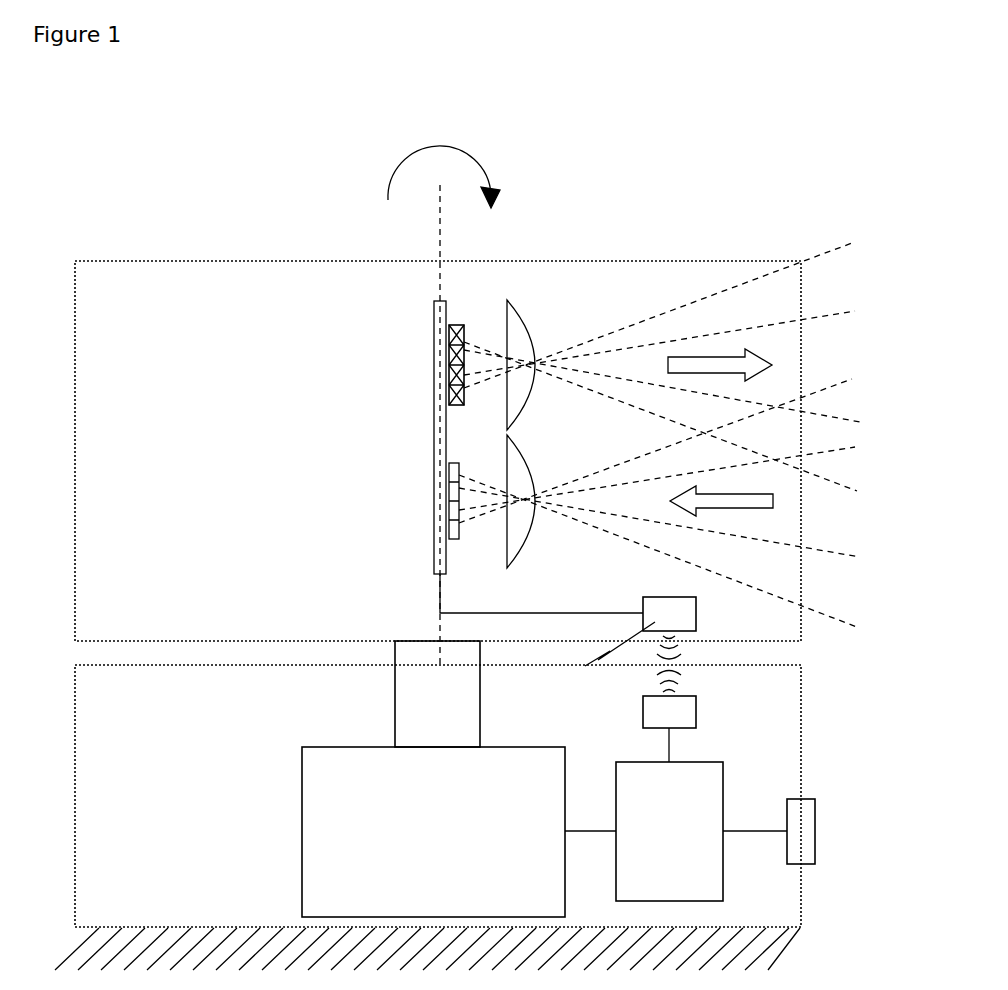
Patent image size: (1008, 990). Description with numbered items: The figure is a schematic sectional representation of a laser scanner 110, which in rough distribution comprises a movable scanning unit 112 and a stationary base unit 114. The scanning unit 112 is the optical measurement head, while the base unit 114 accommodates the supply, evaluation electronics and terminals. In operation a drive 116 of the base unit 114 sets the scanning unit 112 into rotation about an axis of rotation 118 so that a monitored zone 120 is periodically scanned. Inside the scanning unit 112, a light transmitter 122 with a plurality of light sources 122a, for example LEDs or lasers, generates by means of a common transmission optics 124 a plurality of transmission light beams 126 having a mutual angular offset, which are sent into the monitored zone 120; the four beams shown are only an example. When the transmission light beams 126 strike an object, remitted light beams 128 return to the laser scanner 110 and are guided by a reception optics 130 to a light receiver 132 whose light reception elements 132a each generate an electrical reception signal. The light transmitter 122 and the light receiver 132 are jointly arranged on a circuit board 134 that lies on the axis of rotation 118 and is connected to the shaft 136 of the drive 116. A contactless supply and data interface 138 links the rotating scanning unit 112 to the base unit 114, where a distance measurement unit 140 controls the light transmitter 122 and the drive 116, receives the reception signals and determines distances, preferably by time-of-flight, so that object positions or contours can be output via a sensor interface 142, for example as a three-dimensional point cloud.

The laser scanner 110 is at (688, 222).
The scanning unit 112 is at (112, 333).
The base unit 114 is at (108, 858).
The drive 116 is at (352, 848).
The axis of rotation 118 is at (437, 217).
The monitored zone 120 is at (874, 222).
The light transmitter 122 is at (450, 362).
The light sources 122a is at (467, 363).
The transmission optics 124 is at (530, 327).
The transmission light beams 126 is at (835, 418).
The remitted light beams 128 is at (893, 503).
The reception optics 130 is at (528, 548).
The light receiver 132 is at (450, 518).
The light reception elements 132a is at (455, 540).
The circuit board 134 is at (437, 447).
The shaft 136 is at (422, 718).
The contactless supply and data interface 138 is at (665, 714).
The distance measurement unit 140 is at (683, 864).
The sensor interface 142 is at (808, 840).